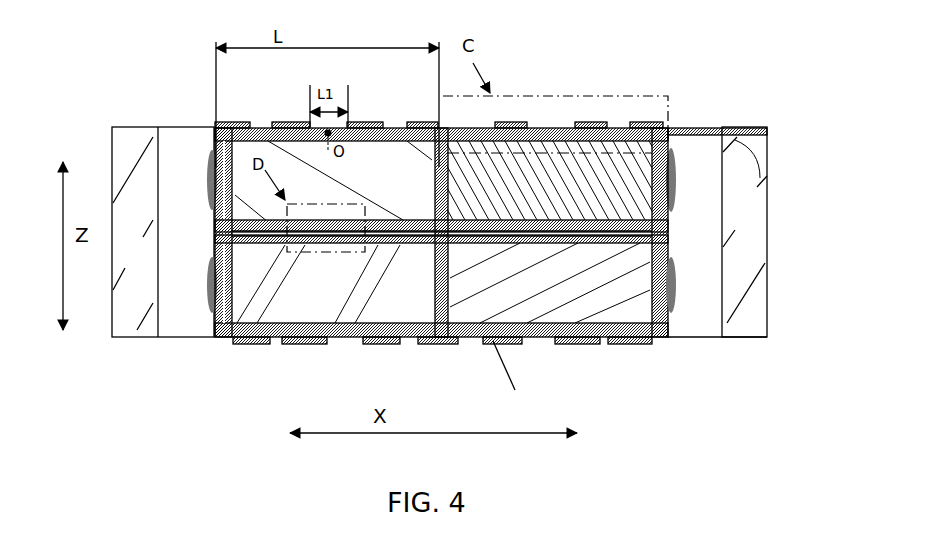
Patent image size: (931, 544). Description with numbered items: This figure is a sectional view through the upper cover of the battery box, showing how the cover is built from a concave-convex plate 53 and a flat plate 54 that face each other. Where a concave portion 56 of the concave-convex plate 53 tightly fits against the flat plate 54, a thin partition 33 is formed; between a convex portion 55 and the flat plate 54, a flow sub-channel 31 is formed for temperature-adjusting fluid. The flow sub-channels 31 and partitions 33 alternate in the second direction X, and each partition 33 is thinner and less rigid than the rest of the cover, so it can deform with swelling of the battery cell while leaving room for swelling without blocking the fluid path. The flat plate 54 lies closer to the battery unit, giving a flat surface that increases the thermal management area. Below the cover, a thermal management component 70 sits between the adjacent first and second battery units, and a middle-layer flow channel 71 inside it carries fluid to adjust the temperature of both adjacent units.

The flow sub-channel 31 is at (512, 128).
The partition 33 is at (548, 128).
The convex portion 55 is at (590, 124).
The concave portion 56 is at (613, 131).
The concave-convex plate 53 is at (695, 131).
The flat plate 54 is at (697, 133).
The thermal management component 70 is at (667, 263).
The middle-layer flow channel 71 is at (570, 225).